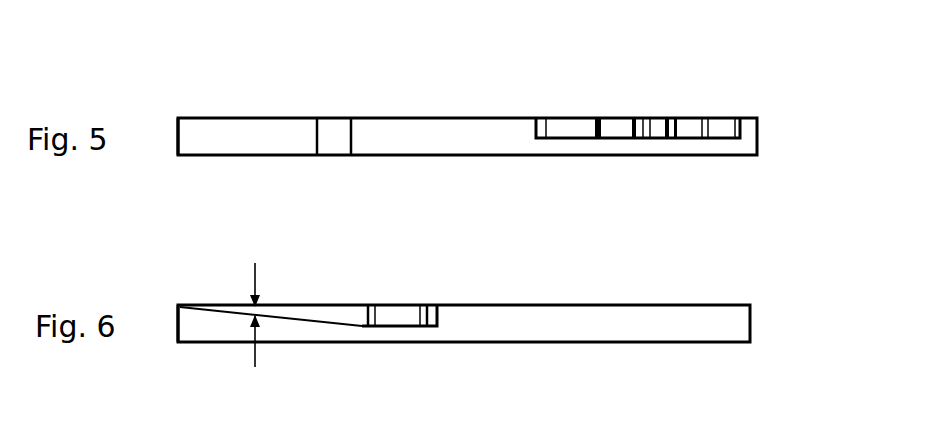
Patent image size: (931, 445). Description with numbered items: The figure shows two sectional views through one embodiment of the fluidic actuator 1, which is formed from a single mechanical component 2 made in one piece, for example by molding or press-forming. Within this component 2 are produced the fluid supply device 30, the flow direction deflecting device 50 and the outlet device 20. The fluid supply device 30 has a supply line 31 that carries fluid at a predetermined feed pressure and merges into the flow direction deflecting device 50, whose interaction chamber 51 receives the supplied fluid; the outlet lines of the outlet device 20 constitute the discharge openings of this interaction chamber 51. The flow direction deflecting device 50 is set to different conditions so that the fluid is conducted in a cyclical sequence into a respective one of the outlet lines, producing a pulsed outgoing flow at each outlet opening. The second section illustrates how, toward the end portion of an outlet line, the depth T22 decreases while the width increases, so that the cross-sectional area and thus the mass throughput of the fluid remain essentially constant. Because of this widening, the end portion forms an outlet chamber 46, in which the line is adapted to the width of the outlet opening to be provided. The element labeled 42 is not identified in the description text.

In FIG. 5, the fluidic actuator 1 is at (478, 47).
In FIG. 6, the fluidic actuator 1 is at (503, 243).
In FIG. 5, the mechanical component 2 is at (713, 145).
In FIG. 6, the mechanical component 2 is at (667, 330).
In FIG. 5, the outlet device 20 is at (240, 93).
In FIG. 6, the outlet device 20 is at (290, 267).
In FIG. 5, the front edge 42 is at (168, 130).
In FIG. 6, the front edge 42 is at (168, 310).
In FIG. 6, the outlet chamber 46 is at (325, 316).
In FIG. 5, the flow direction deflecting device 50 is at (592, 92).
In FIG. 5, the interaction chamber 51 is at (570, 125).
In FIG. 5, the fluid supply device 30 is at (647, 90).
In FIG. 5, the supply line 31 is at (717, 128).
In FIG. 6, the depth of the outlet line T22 is at (229, 313).